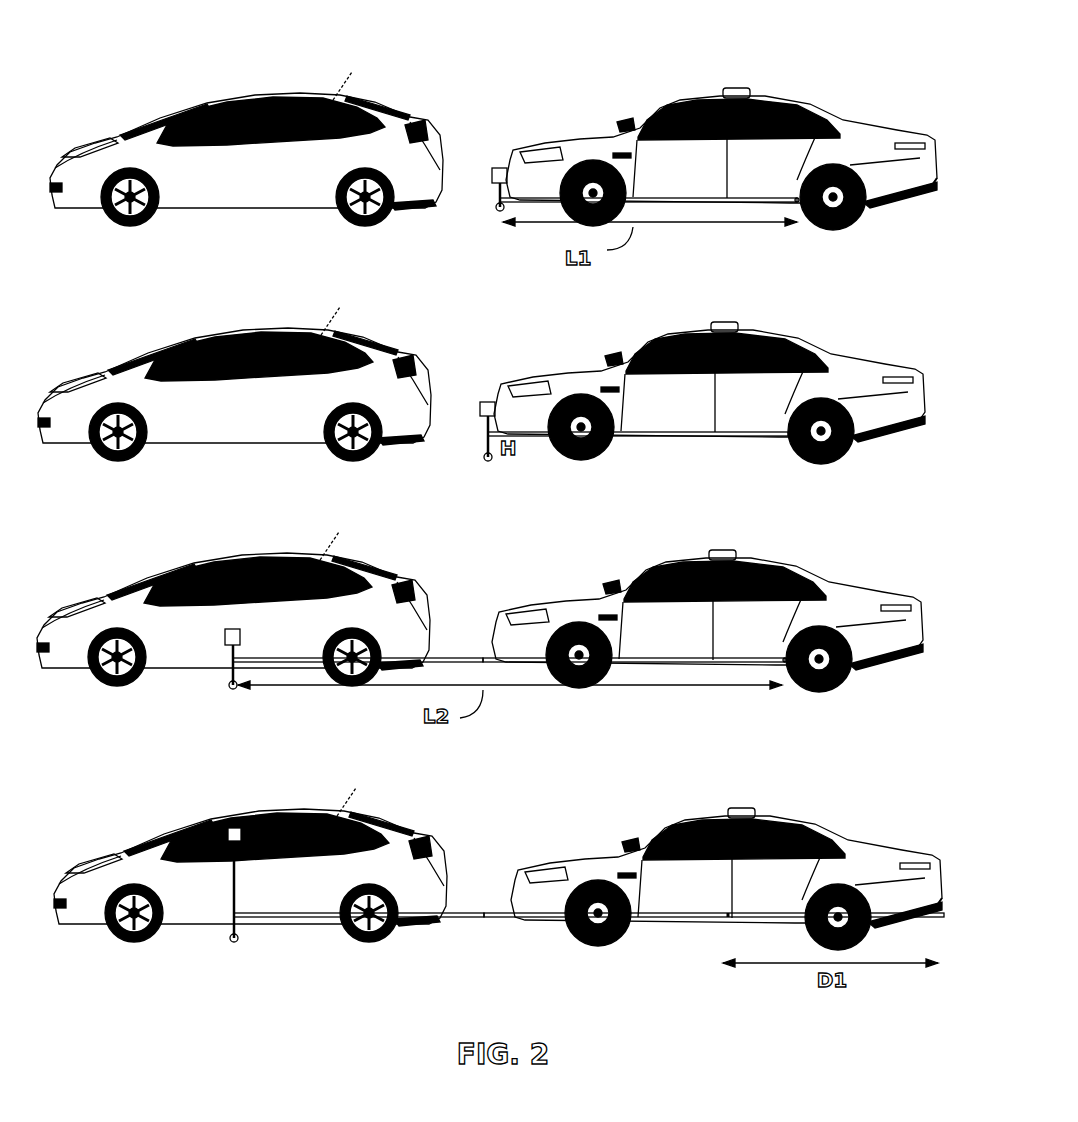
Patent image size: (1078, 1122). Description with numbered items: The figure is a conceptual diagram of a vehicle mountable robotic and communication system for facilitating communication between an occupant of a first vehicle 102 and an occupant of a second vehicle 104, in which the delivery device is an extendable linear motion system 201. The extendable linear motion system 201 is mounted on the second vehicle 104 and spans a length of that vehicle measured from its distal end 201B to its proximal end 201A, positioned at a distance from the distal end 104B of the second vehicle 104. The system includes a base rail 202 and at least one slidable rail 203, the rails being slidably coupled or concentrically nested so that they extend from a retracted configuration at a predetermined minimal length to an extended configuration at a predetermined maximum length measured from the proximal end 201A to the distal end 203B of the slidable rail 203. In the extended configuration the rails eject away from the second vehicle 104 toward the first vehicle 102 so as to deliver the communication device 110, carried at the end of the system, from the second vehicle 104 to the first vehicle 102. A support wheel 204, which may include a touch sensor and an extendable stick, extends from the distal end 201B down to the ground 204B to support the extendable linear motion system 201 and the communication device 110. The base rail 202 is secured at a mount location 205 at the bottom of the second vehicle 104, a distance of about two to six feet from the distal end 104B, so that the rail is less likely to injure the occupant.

The first vehicle 102 is at (266, 90).
The second vehicle 104 is at (757, 93).
The distal end of second vehicle 104B is at (938, 195).
The communication device 110 is at (497, 165).
The extendable linear motion system 201 is at (706, 210).
The proximal end of extendable linear motion system 201A is at (797, 226).
The distal end of extendable linear motion system 201B is at (497, 209).
The base rail 202 is at (677, 662).
The slidable rail 203 is at (430, 662).
The distal end of slidable rail 203B is at (232, 689).
The support wheel 204 is at (500, 213).
The ground 204B is at (486, 461).
The mount location 205 is at (728, 919).